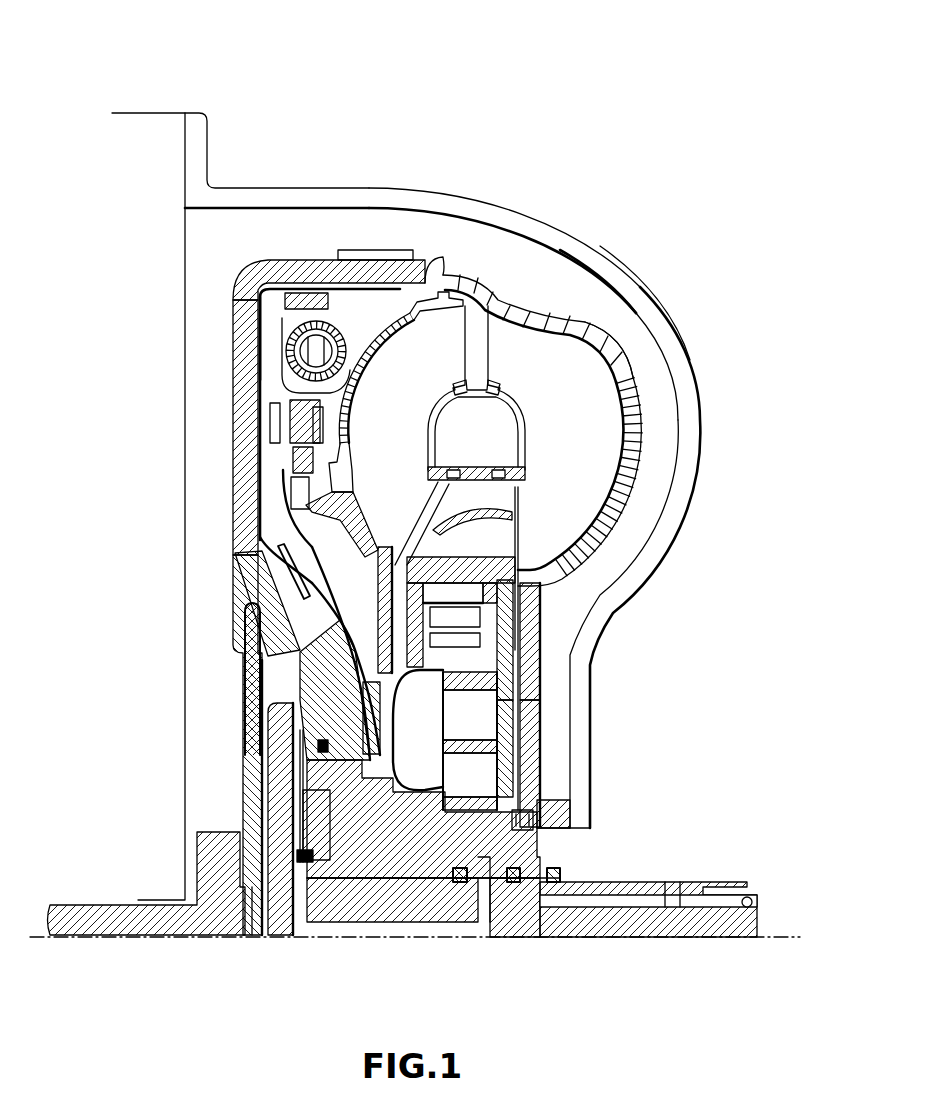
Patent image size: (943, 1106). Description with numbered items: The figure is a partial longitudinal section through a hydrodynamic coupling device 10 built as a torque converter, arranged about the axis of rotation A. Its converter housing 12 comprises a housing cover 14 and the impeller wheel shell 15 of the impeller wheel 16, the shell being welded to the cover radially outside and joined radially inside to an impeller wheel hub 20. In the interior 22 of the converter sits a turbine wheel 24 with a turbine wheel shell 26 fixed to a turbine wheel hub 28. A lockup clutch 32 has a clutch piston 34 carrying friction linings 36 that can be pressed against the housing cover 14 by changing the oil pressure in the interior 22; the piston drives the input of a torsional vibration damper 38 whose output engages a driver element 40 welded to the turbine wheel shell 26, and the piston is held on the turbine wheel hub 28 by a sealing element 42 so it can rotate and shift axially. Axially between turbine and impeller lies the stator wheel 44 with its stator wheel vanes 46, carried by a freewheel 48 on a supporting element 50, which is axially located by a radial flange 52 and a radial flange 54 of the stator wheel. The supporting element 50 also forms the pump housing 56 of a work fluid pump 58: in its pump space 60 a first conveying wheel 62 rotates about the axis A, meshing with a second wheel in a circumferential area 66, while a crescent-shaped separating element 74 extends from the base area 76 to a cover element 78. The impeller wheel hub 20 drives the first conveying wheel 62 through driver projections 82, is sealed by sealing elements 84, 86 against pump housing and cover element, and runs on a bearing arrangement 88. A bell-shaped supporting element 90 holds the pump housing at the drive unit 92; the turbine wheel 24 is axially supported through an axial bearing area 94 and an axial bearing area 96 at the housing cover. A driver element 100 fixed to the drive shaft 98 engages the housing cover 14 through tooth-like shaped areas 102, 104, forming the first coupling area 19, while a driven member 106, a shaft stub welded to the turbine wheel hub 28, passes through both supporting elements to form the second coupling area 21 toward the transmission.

The hydrodynamic coupling device 10 is at (550, 484).
The converter housing 12 is at (512, 262).
The housing cover 14 is at (320, 258).
The impeller wheel shell 15 is at (634, 372).
The impeller wheel 16 is at (598, 320).
The first coupling area 19 is at (333, 862).
The impeller wheel hub 20 is at (527, 650).
The second coupling area 21 is at (664, 904).
The interior 22 is at (460, 472).
The turbine wheel 24 is at (384, 305).
The turbine wheel shell 26 is at (292, 434).
The turbine wheel hub 28 is at (325, 833).
The lockup clutch 32 is at (236, 377).
The clutch piston 34 is at (274, 500).
The friction linings 36 is at (256, 320).
The torsional vibration damper 38 is at (350, 298).
The driver element 40 is at (294, 543).
The sealing element 42 is at (278, 674).
The stator wheel 44 is at (548, 490).
The stator wheel vanes 46 is at (446, 650).
The freewheel 48 is at (604, 600).
The supporting element 50 is at (393, 872).
The radial flange 52 is at (535, 655).
The radial flange 54 is at (272, 622).
The pump housing 56 is at (296, 856).
The work fluid pump 58 is at (515, 731).
The pump space 60 is at (478, 775).
The first conveying wheel 62 is at (447, 852).
The circumferential area 66 is at (507, 710).
The separating element 74 is at (517, 775).
The base area 76 is at (518, 672).
The cover element 78 is at (543, 660).
The driver projections 82 is at (460, 885).
The sealing element 84 is at (523, 838).
The sealing element 86 is at (555, 885).
The bearing arrangement 88 is at (552, 834).
The supporting element 90 is at (664, 313).
The drive unit 92 is at (172, 96).
The axial bearing area 94 is at (330, 835).
The axial bearing area 96 is at (312, 805).
The drive shaft 98 is at (118, 935).
The driver element 100 is at (252, 935).
The shaped area 102 is at (323, 572).
The shaped area 104 is at (278, 676).
The driven member 106 is at (716, 933).
The axis of rotation A is at (692, 940).